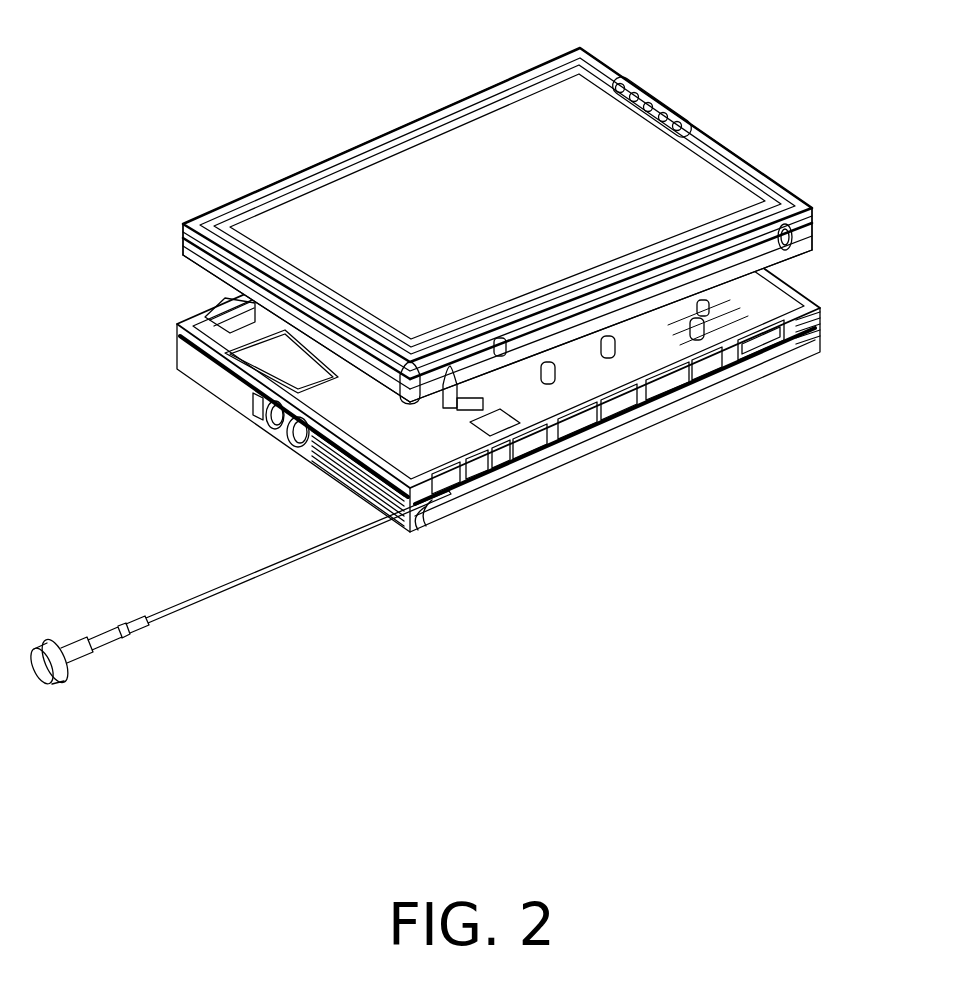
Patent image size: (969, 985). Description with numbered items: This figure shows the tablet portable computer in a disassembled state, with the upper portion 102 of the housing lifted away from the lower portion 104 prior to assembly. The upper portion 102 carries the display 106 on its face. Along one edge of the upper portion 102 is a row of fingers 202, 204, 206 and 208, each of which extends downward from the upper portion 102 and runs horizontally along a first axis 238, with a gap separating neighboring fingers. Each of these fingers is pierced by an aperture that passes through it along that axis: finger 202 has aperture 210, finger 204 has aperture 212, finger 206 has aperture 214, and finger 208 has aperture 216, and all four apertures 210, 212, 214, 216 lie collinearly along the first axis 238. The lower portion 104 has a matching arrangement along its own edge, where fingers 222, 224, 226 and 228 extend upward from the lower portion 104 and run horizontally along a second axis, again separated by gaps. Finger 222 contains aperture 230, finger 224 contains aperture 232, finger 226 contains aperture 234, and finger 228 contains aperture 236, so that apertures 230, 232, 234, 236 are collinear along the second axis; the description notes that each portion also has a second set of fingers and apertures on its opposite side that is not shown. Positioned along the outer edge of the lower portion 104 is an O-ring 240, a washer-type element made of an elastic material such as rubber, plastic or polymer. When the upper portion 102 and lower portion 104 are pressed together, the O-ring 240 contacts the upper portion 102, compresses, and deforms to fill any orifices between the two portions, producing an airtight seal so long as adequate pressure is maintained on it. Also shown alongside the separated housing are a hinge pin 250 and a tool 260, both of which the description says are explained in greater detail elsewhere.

The upper portion 102 is at (727, 152).
The lower portion 104 is at (812, 350).
The display 106 is at (443, 168).
The finger 202 is at (490, 383).
The finger 204 is at (548, 374).
The finger 206 is at (697, 328).
The finger 208 is at (745, 270).
The aperture 210 is at (437, 376).
The aperture 212 is at (500, 336).
The aperture 214 is at (608, 336).
The aperture 216 is at (703, 302).
The finger 222 is at (470, 502).
The finger 224 is at (550, 472).
The finger 226 is at (627, 427).
The finger 228 is at (720, 397).
The aperture 230 is at (435, 522).
The aperture 232 is at (487, 496).
The aperture 234 is at (573, 456).
The aperture 236 is at (663, 417).
The first axis 238 is at (778, 276).
The O-ring 240 is at (216, 366).
The hinge pin 250 is at (258, 583).
The tool 260 is at (108, 654).